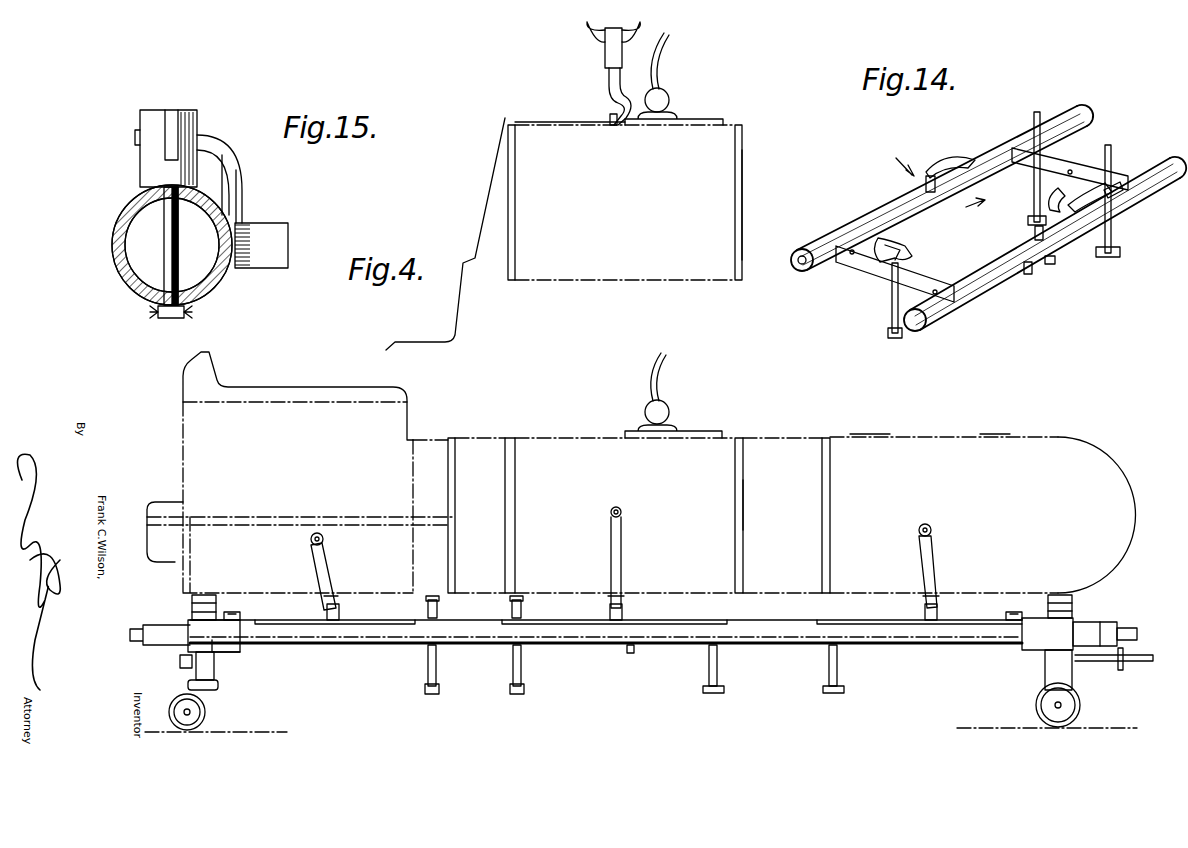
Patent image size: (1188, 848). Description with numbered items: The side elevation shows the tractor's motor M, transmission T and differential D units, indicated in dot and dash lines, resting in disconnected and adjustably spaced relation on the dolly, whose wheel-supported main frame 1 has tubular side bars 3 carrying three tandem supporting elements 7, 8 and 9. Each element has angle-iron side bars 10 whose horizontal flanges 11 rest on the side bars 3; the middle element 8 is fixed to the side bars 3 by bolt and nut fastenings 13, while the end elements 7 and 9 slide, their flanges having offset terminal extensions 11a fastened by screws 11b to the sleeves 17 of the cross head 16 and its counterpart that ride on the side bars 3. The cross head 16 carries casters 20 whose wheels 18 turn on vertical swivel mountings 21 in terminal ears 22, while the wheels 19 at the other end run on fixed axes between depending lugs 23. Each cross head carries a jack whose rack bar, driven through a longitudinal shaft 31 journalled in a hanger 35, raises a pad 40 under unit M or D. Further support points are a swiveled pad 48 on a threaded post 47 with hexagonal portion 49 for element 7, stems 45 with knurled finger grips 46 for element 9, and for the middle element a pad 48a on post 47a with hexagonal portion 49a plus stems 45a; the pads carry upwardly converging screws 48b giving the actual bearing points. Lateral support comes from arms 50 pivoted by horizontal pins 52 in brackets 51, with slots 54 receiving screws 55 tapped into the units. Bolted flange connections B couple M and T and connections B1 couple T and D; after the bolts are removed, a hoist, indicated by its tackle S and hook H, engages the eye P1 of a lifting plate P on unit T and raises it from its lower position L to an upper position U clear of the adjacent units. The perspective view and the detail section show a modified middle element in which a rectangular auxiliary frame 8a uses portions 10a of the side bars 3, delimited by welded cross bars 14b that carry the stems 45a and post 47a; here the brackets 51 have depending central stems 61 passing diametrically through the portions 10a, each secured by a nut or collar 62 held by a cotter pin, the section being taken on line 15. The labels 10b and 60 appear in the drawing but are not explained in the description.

In FIG. 15, the main supporting frame 1 is at (108, 235).
In FIG. 14, the main supporting frame 1 is at (802, 248).
In FIG. 15, the side bars 3 is at (113, 242).
In FIG. 14, the side bars 3 is at (822, 245).
In FIG. 4, the end supporting element 7 is at (306, 628).
In FIG. 4, the middle supporting element 8 is at (600, 624).
In FIG. 14, the auxiliary frame 8a is at (848, 246).
In FIG. 4, the end supporting element 9 is at (906, 626).
In FIG. 4, the side bars 10 is at (370, 616).
In FIG. 14, the side bar portions 10a is at (983, 152).
In FIG. 15, the rail wall 10b is at (112, 263).
In FIG. 4, the horizontal flanges 11 is at (392, 616).
In FIG. 4, the offset terminal extensions 11a is at (228, 612).
In FIG. 4, the screws 11b is at (238, 612).
In FIG. 4, the bolt and nut fastenings 13 is at (630, 654).
In FIG. 15, the auxiliary frame cross bars 14b is at (275, 225).
In FIG. 14, the auxiliary frame cross bars 14b is at (1047, 160).
In FIG. 14, the section line 15 is at (896, 158).
In FIG. 4, the cross head 16 is at (224, 654).
In FIG. 4, the longitudinal sleeves 17 is at (232, 642).
In FIG. 4, the supporting wheels 18 is at (187, 728).
In FIG. 4, the supporting wheels 19 is at (1058, 728).
In FIG. 4, the casters 20 is at (216, 690).
In FIG. 4, the vertical swivel mounting 21 is at (186, 676).
In FIG. 4, the terminal ear 22 is at (192, 690).
In FIG. 4, the depending lugs 23 is at (1045, 688).
In FIG. 4, the longitudinal shaft 31 is at (1146, 662).
In FIG. 4, the hanger 35 is at (1120, 670).
In FIG. 4, the pad 40 is at (203, 596).
In FIG. 4, the vertical stems 45 is at (838, 680).
In FIG. 4, the vertical stems 45a is at (708, 680).
In FIG. 14, the vertical stems 45a is at (1132, 136).
In FIG. 4, the knurled finger grips 46 is at (823, 690).
In FIG. 14, the knurled finger grips 46 is at (1028, 221).
In FIG. 4, the vertical post 47 is at (428, 676).
In FIG. 4, the vertical post 47a is at (522, 672).
In FIG. 14, the vertical post 47a is at (890, 306).
In FIG. 4, the pad 48 is at (433, 600).
In FIG. 4, the pad 48a is at (522, 600).
In FIG. 4, the screws 48b is at (512, 607).
In FIG. 14, the screws 48b is at (878, 264).
In FIG. 4, the hexagonal portion 49 is at (425, 694).
In FIG. 4, the hexagonal portion 49a is at (524, 694).
In FIG. 14, the hexagonal portion 49a is at (888, 334).
In FIG. 15, the arms 50 is at (205, 145).
In FIG. 4, the arms 50 is at (318, 560).
In FIG. 14, the arms 50 is at (930, 178).
In FIG. 15, the brackets 51 is at (145, 118).
In FIG. 4, the brackets 51 is at (328, 610).
In FIG. 14, the brackets 51 is at (1035, 234).
In FIG. 15, the horizontal pins 52 is at (140, 136).
In FIG. 4, the horizontal pins 52 is at (338, 608).
In FIG. 14, the horizontal pins 52 is at (1027, 272).
In FIG. 4, the longitudinal slots 54 is at (313, 535).
In FIG. 14, the longitudinal slots 54 is at (1120, 184).
In FIG. 4, the fastening screws 55 is at (320, 534).
In FIG. 4, the bolt head 60 is at (1138, 634).
In FIG. 15, the depending central stems 61 is at (166, 249).
In FIG. 15, the nut 62 is at (166, 320).
In FIG. 14, the nut 62 is at (1050, 264).
In FIG. 4, the bolted flange connections B is at (505, 438).
In FIG. 4, the bolted flange connections B1 is at (822, 438).
In FIG. 4, the differential unit D is at (920, 442).
In FIG. 4, the lifting hook H is at (600, 93).
In FIG. 4, the lower position L is at (745, 508).
In FIG. 4, the motor unit M is at (297, 397).
In FIG. 4, the lifting plate P is at (545, 124).
In FIG. 4, the eye P1 is at (608, 112).
In FIG. 4, the tackle S is at (603, 46).
In FIG. 4, the transmission unit T is at (547, 268).
In FIG. 4, the upper position U is at (748, 184).